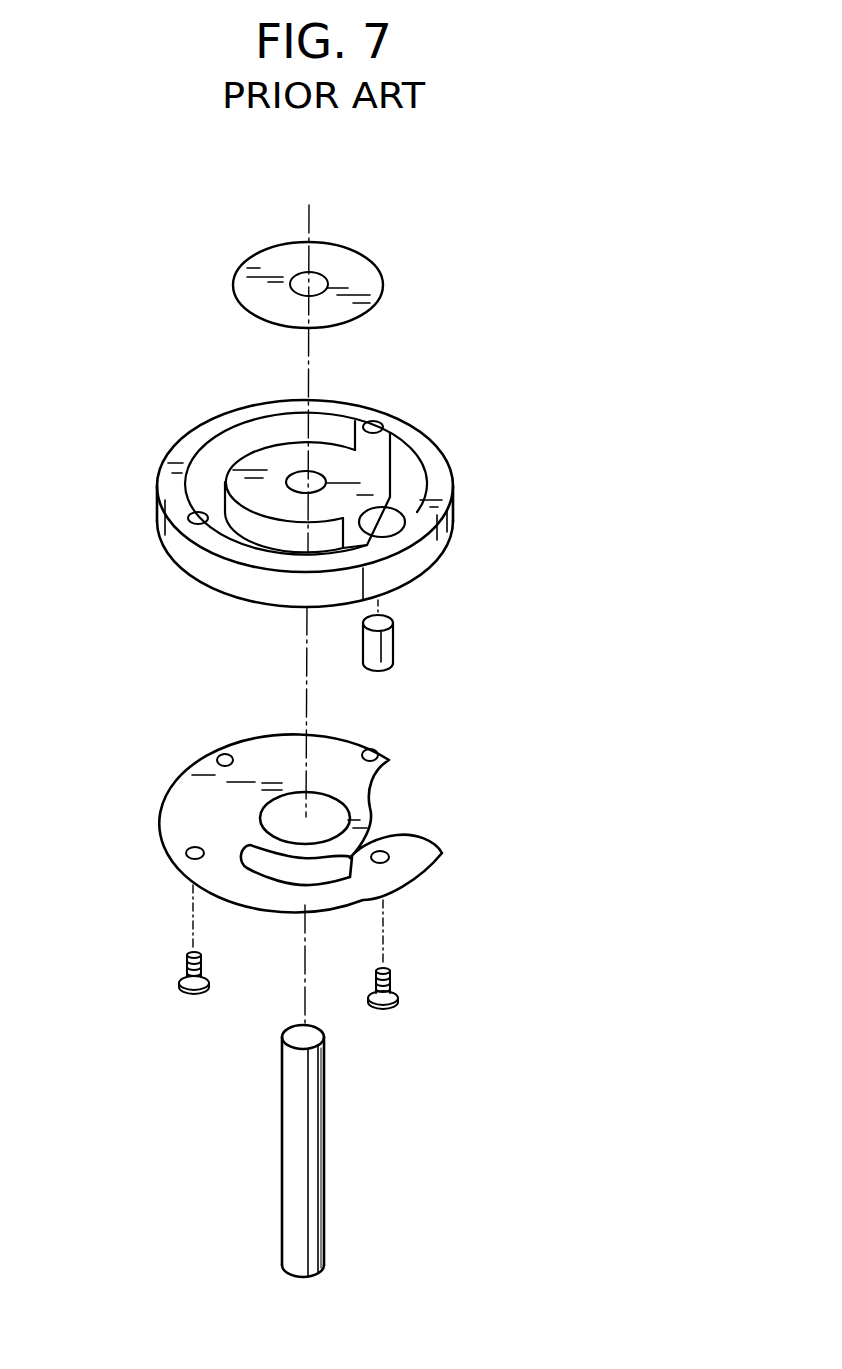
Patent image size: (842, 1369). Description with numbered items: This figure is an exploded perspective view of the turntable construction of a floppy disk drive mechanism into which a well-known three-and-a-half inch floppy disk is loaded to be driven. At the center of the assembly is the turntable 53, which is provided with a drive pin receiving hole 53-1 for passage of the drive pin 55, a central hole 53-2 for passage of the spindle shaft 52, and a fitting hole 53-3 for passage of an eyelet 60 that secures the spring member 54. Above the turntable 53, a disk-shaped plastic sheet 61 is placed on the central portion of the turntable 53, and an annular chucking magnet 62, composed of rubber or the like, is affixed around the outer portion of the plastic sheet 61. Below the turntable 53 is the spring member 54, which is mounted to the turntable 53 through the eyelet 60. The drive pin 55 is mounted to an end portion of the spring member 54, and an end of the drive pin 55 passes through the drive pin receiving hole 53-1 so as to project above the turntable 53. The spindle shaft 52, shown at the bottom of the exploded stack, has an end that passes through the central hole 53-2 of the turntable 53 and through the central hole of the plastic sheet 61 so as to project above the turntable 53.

The spindle shaft 52 is at (325, 1162).
The turntable 53 is at (448, 457).
The drive pin receiving hole 53-1 is at (385, 523).
The central hole 53-2 is at (300, 477).
The fitting hole 53-3 is at (373, 420).
The spring member 54 is at (177, 792).
The drive pin 55 is at (397, 637).
The eyelet 60 is at (180, 981).
The plastic sheet 61 is at (367, 281).
The chucking magnet 62 is at (223, 455).